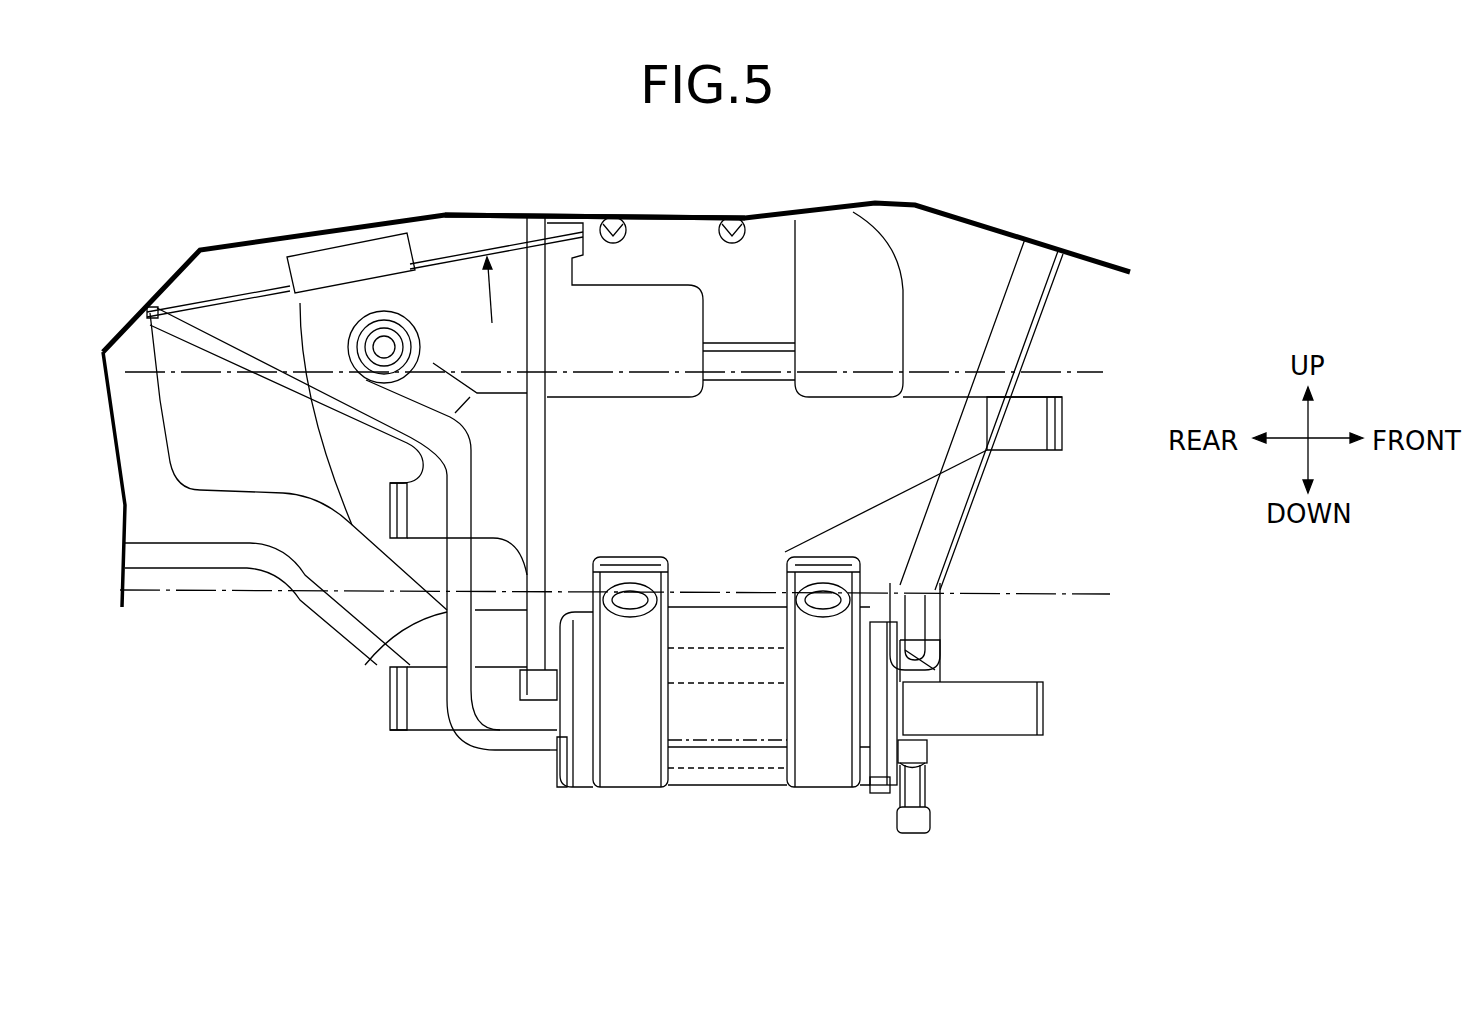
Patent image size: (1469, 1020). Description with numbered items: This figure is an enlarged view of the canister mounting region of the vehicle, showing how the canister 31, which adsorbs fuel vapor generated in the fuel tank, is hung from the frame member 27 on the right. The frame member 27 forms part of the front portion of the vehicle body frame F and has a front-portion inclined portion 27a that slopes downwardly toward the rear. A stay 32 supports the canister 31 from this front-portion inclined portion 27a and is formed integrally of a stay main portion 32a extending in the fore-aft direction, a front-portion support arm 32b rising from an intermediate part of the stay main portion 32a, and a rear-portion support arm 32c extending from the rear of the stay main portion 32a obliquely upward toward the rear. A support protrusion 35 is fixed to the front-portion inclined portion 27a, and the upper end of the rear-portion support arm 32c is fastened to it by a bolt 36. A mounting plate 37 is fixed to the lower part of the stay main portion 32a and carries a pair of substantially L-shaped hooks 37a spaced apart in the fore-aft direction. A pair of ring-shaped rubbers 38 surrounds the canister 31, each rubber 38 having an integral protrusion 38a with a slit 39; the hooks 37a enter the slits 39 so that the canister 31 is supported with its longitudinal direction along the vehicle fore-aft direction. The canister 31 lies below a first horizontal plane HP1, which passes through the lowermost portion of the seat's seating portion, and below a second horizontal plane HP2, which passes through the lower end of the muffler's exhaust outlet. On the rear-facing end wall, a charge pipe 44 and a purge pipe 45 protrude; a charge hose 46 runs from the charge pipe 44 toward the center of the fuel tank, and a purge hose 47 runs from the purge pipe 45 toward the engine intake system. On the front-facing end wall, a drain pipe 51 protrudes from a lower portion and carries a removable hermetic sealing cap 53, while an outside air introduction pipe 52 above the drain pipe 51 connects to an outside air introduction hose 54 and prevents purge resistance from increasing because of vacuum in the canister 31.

The frame member 27 is at (227, 306).
The front-portion inclined portion 27a is at (492, 222).
The support protrusion 35 is at (263, 287).
The rear-portion support arm 32c is at (428, 357).
The bolt 36 is at (370, 383).
The purge hose 47 is at (541, 429).
The stay main portion 32a is at (640, 410).
The front-portion support arm 32b is at (785, 328).
The stay 32 is at (907, 513).
The outside air introduction hose 54 is at (1043, 285).
The first horizontal plane HP1 is at (1103, 372).
The second horizontal plane HP2 is at (1110, 594).
The vehicle body frame F is at (490, 305).
The charge hose 46 is at (385, 662).
The purge pipe 45 is at (457, 710).
The charge pipe 44 is at (553, 760).
The canister 31 is at (720, 772).
The ring-shaped rubber 38 is at (628, 800).
The protrusion 38a is at (665, 557).
The hook 37a is at (605, 558).
The slit 39 is at (635, 560).
The mounting plate 37 is at (767, 780).
The outside air introduction pipe 52 is at (940, 690).
The drain pipe 51 is at (925, 752).
The hermetic sealing cap 53 is at (932, 826).